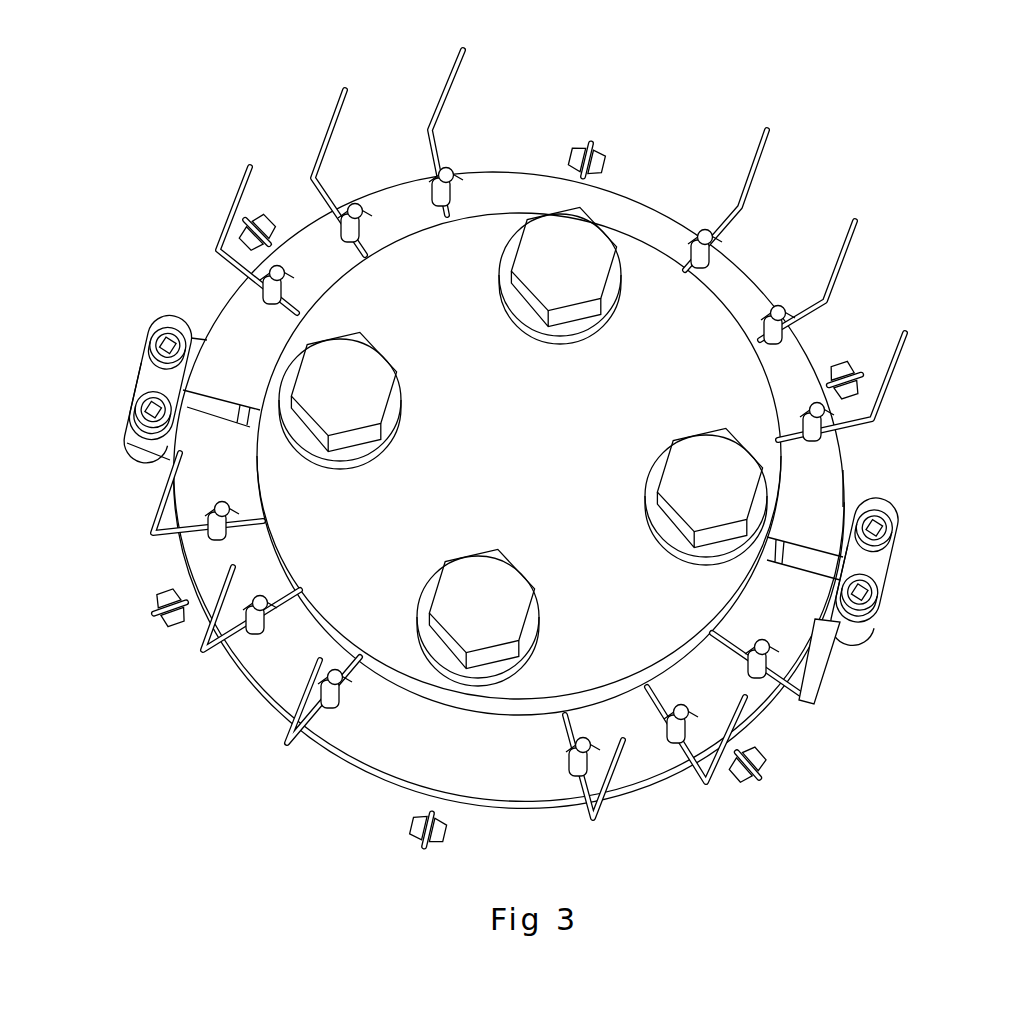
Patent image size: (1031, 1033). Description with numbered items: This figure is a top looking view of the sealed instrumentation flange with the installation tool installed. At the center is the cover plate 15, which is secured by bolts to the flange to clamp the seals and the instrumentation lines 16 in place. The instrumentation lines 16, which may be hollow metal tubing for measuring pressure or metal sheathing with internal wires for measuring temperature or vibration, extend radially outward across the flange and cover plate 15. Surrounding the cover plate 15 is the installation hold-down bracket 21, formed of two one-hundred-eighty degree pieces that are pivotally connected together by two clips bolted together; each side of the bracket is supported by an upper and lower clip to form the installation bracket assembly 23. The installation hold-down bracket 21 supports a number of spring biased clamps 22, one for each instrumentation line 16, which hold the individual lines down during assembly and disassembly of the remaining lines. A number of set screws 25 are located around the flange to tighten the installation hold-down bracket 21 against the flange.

The cover plate 15 is at (650, 320).
The instrumentation lines 16 is at (843, 250).
The installation hold-down bracket 21 is at (812, 493).
The spring biased clamps 22 is at (772, 300).
The installation bracket assembly 23 is at (137, 377).
The set screws 25 is at (585, 150).